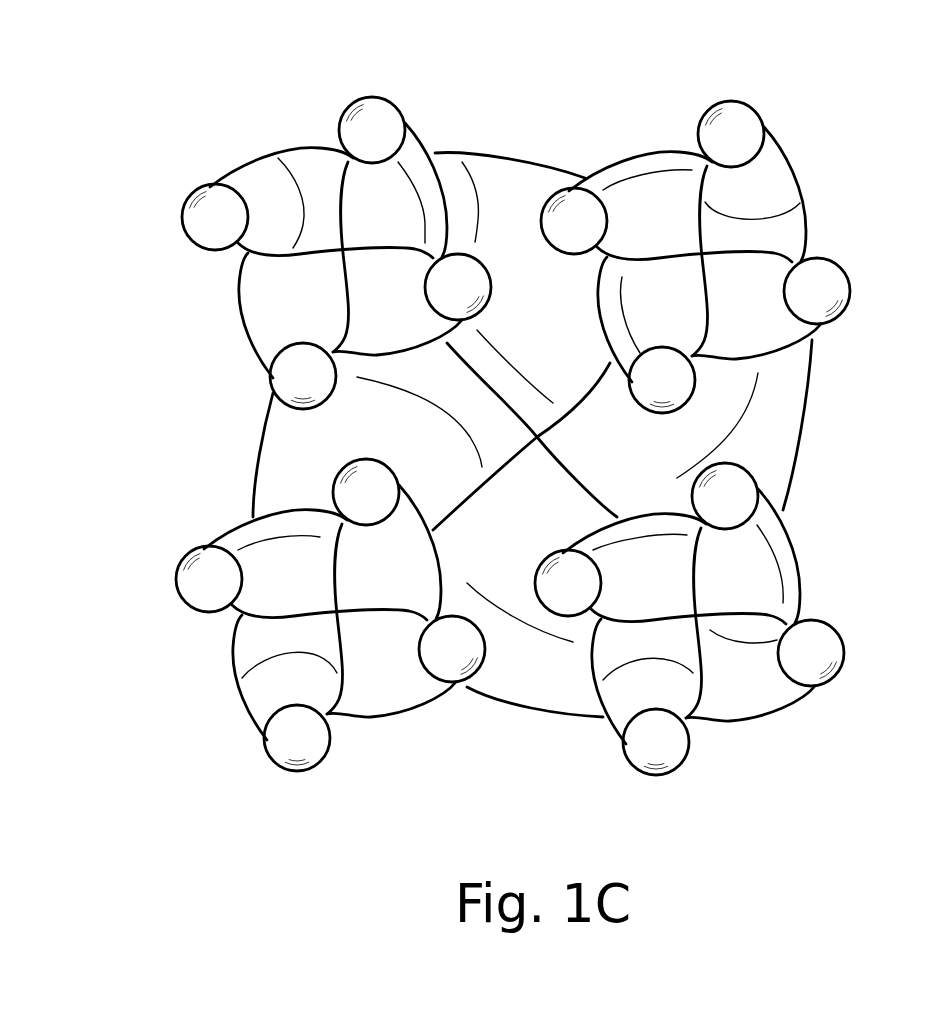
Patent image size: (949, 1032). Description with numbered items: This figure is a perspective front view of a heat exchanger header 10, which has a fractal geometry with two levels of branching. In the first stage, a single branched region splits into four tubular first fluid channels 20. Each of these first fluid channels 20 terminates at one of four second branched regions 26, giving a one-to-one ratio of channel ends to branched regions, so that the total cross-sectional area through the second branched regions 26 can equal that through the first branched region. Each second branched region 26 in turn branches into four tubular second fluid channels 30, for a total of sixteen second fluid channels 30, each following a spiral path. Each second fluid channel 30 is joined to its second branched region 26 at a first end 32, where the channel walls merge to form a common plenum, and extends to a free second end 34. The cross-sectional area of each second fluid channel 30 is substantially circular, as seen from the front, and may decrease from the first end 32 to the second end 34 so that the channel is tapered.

The heat exchanger header 10 is at (843, 112).
The first fluid channels 20 is at (503, 237).
The second branched regions 26 is at (343, 253).
The second fluid channels 30 is at (270, 183).
The first end 32 is at (313, 180).
The second end 34 is at (185, 197).